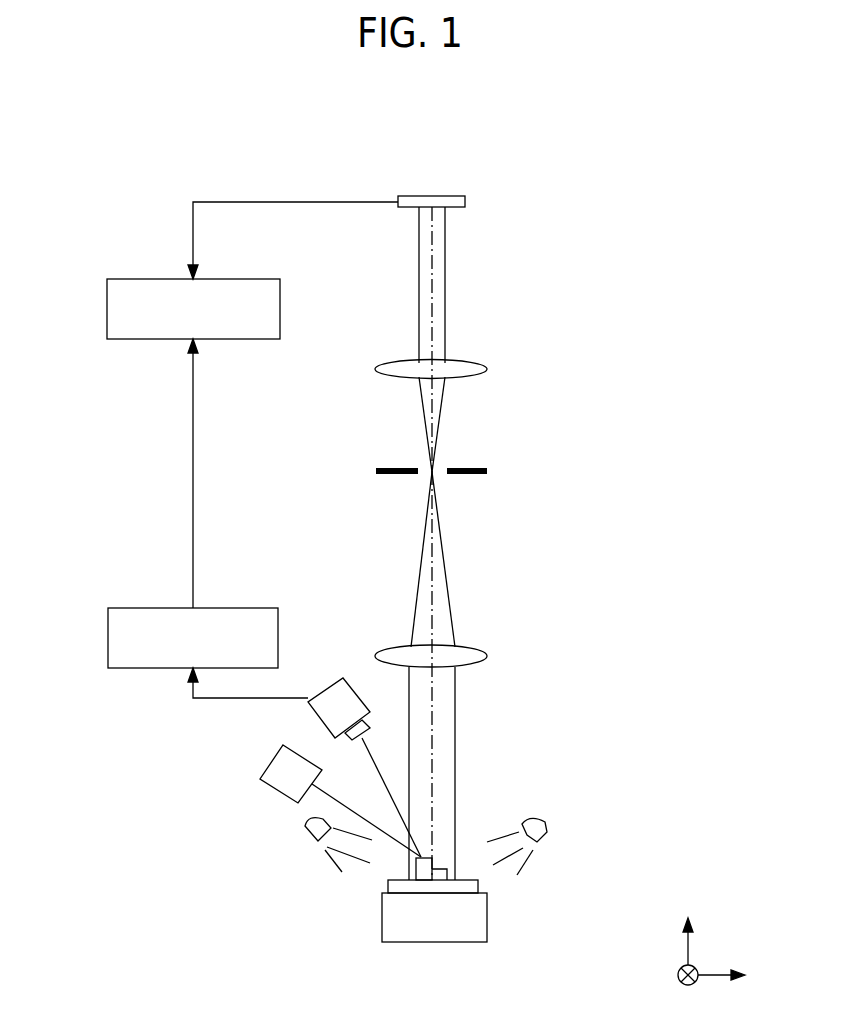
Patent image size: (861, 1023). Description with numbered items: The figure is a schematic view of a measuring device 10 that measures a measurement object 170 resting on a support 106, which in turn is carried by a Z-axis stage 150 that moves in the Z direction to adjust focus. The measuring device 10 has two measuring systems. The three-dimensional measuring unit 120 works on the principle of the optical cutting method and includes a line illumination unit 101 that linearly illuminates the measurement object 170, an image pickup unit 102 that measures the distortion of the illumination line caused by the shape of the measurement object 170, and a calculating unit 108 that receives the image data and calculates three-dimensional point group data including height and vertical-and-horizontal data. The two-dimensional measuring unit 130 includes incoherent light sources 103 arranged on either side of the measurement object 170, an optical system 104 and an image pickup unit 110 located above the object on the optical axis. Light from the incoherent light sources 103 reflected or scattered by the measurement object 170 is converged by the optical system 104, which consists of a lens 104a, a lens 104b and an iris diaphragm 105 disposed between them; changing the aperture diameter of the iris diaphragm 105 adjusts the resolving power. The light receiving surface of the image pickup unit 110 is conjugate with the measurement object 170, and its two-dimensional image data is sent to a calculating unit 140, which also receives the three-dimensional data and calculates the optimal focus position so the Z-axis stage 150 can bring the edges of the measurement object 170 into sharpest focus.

The measuring device 10 is at (439, 95).
The image pickup unit 110 is at (433, 196).
The optical system 104 is at (444, 509).
The lens 104a is at (409, 630).
The lens 104b is at (390, 375).
The iris diaphragm 105 is at (384, 478).
The two-dimensional measuring unit 130 is at (624, 200).
The calculating unit 140 is at (280, 304).
The three-dimensional measuring unit 120 is at (97, 803).
The calculating unit 108 is at (238, 607).
The image pickup unit 102 is at (333, 698).
The line illumination unit 101 is at (275, 770).
The incoherent light sources 103 is at (310, 834).
The measurement object 170 is at (425, 868).
The support 106 is at (477, 887).
The Z-axis stage 150 is at (432, 933).